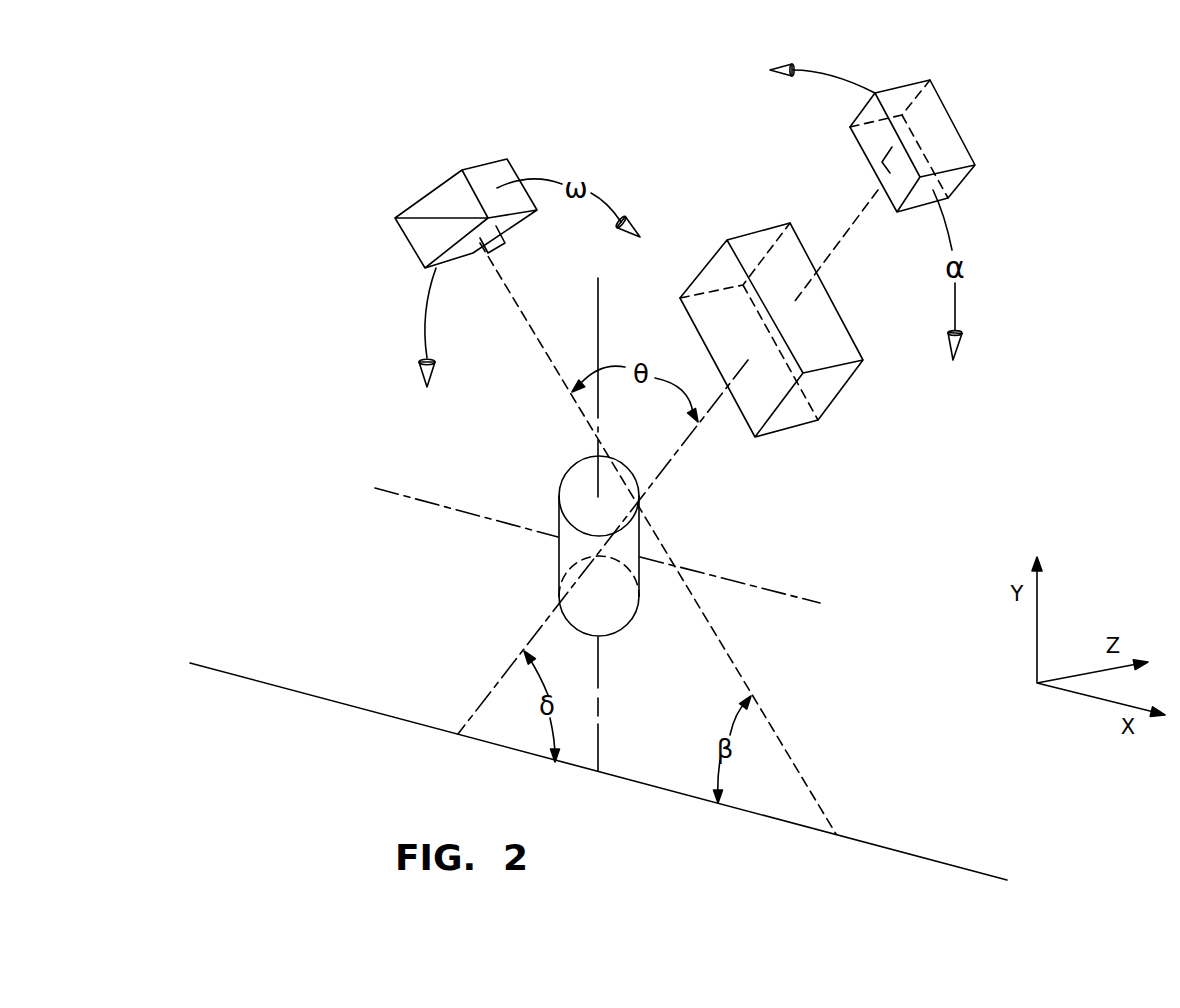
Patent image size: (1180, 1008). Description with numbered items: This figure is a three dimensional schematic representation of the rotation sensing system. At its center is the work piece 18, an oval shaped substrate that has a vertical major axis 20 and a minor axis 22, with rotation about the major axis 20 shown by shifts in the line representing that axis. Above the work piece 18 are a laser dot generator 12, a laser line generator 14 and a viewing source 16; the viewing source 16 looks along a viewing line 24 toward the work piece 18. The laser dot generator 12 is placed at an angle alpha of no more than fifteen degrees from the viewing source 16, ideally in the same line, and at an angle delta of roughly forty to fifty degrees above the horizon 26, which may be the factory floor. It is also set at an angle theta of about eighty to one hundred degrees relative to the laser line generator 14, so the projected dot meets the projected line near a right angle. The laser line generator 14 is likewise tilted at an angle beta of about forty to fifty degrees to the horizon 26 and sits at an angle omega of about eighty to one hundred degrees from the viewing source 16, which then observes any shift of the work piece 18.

The laser dot generator 12 is at (943, 128).
The laser line generator 14 is at (427, 196).
The viewing source 16 is at (793, 250).
The work piece 18 is at (568, 490).
The major axis 20 is at (597, 310).
The minor axis 22 is at (826, 590).
The camera optical axis 24 is at (678, 456).
The horizon 26 is at (925, 857).